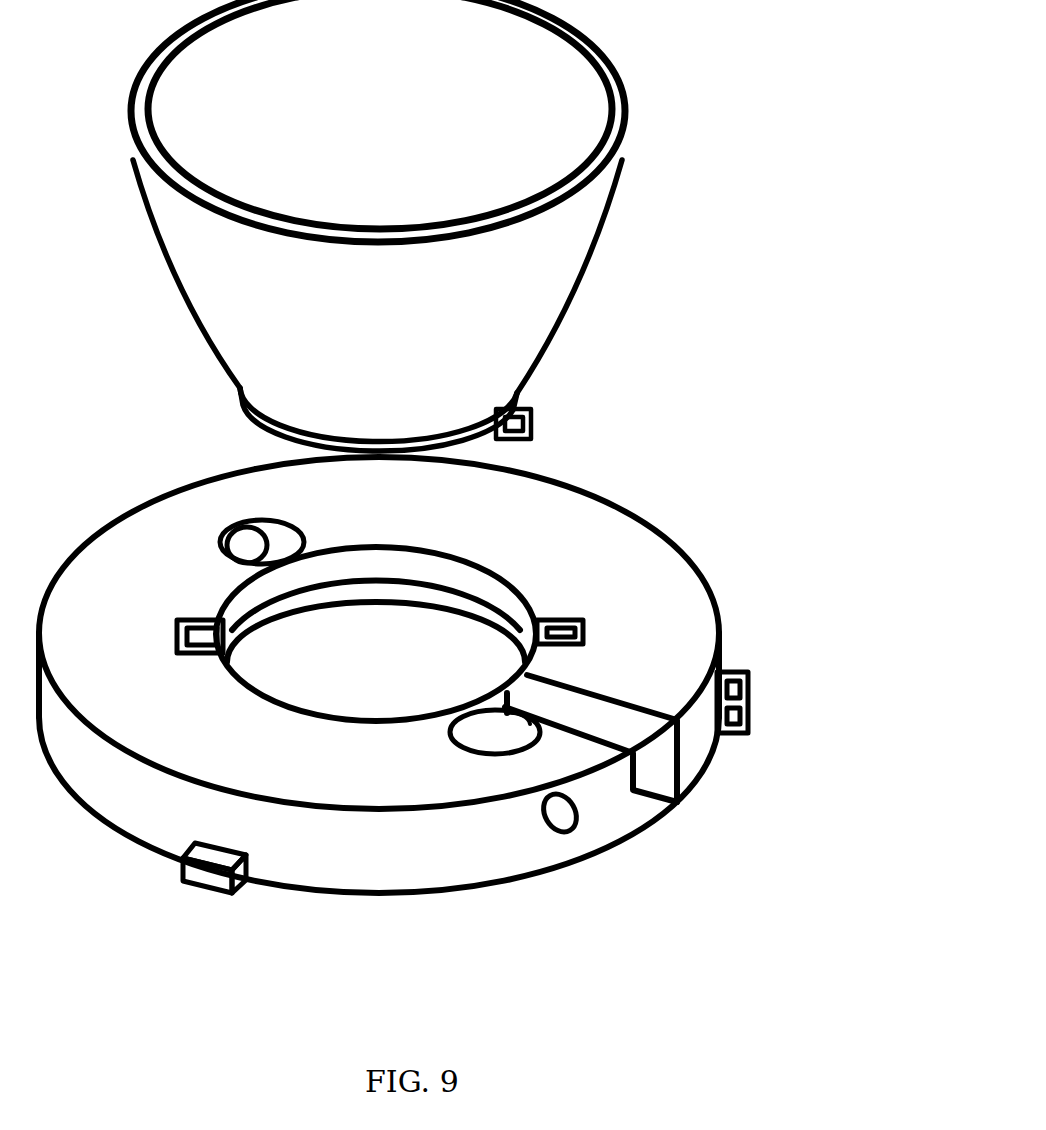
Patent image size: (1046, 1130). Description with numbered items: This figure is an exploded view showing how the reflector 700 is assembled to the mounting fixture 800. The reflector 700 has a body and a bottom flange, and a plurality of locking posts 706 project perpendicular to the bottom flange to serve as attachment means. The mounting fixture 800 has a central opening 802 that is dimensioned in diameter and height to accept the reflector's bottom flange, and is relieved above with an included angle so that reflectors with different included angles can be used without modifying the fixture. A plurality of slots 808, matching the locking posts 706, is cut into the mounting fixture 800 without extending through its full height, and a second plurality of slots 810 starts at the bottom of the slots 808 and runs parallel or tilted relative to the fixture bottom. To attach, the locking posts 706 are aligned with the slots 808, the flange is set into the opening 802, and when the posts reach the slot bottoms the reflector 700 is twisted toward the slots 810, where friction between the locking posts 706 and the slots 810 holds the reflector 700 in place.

The reflector 700 is at (588, 16).
The locking posts 706 is at (540, 413).
The mounting fixture 800 is at (733, 605).
The opening 802 is at (420, 645).
The slots 808 is at (565, 632).
The second plurality of slots 810 is at (265, 615).